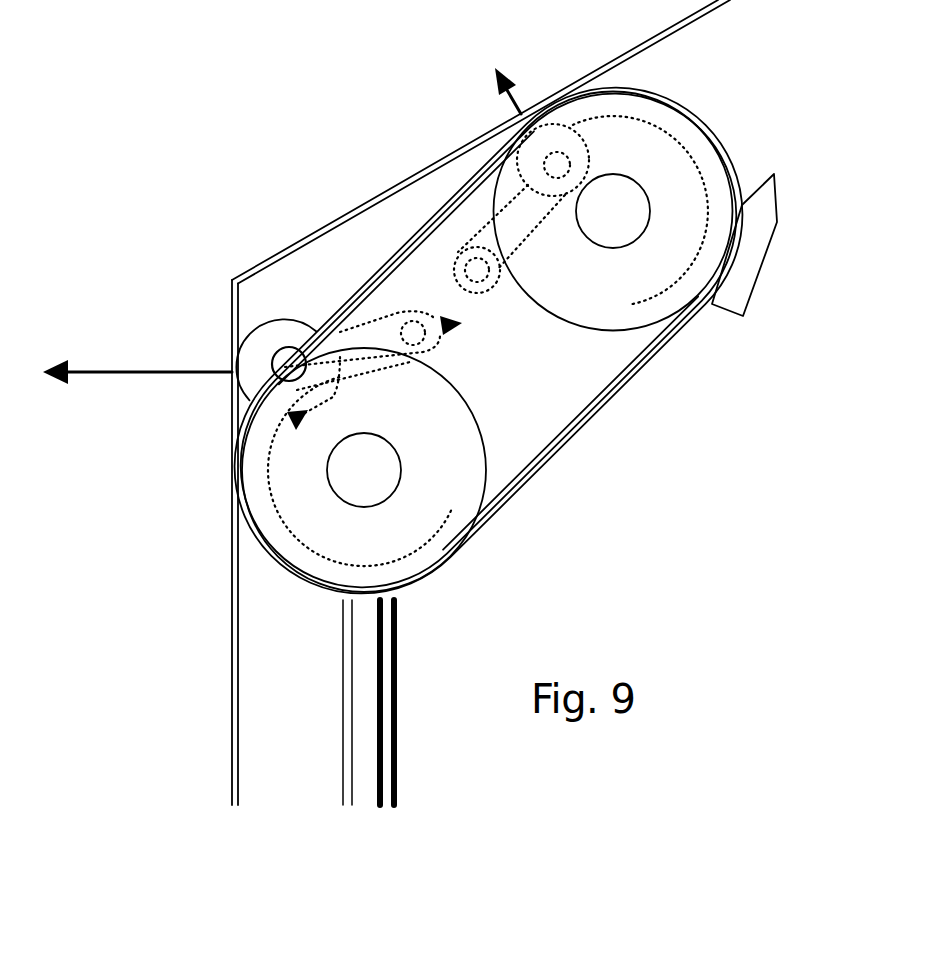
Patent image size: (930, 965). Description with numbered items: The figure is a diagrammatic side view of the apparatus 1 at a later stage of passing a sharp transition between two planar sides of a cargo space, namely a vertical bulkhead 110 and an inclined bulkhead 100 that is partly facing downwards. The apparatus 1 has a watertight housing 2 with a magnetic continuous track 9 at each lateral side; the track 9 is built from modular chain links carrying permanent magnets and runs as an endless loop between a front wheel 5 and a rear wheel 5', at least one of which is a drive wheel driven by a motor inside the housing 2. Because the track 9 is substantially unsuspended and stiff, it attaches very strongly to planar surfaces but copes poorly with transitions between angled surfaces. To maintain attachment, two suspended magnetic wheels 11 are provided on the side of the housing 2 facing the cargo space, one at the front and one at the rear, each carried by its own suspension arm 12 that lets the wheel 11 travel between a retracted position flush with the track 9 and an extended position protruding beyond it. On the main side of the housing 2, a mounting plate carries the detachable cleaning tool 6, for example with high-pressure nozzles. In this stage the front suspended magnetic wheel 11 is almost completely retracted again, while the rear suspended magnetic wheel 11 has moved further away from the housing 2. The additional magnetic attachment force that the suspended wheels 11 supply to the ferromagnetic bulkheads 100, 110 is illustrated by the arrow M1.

The apparatus 1 is at (617, 452).
The watertight housing 2 is at (598, 358).
The front wheel 5 is at (593, 227).
The rear wheel 5' is at (376, 451).
The cleaning tool 6 is at (747, 273).
The magnetic continuous track 9 is at (553, 457).
The suspended magnetic wheel 11 is at (555, 132).
The suspension arm 12 is at (284, 355).
The bulkhead 100 is at (687, 25).
The bulkhead 110 is at (235, 728).
The arrows M1 is at (125, 370).